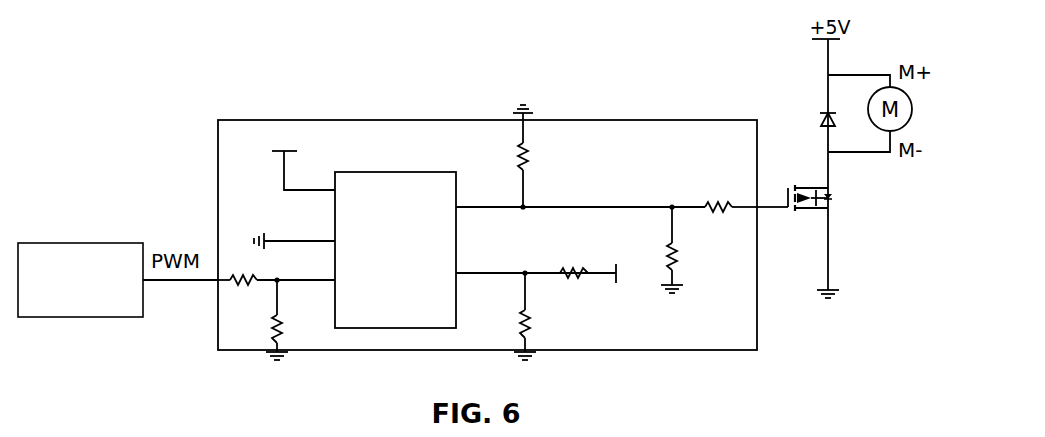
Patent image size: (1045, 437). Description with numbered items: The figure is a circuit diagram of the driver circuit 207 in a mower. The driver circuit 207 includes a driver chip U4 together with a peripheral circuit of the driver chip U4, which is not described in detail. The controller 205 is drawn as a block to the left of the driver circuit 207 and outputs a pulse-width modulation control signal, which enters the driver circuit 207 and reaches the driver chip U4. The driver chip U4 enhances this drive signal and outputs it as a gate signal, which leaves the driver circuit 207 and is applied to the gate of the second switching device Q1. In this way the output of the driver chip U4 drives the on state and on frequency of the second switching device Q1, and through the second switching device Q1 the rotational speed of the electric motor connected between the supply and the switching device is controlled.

The controller 205 is at (80, 318).
The driver circuit 207 is at (487, 120).
The driver chip U4 is at (395, 236).
The second switching device Q1 is at (810, 221).